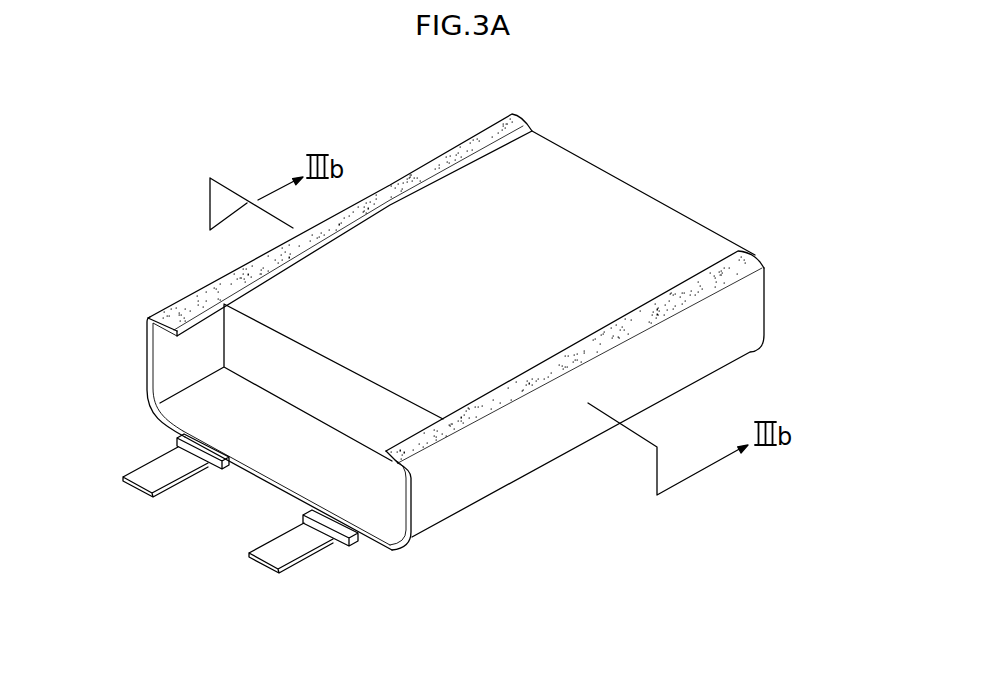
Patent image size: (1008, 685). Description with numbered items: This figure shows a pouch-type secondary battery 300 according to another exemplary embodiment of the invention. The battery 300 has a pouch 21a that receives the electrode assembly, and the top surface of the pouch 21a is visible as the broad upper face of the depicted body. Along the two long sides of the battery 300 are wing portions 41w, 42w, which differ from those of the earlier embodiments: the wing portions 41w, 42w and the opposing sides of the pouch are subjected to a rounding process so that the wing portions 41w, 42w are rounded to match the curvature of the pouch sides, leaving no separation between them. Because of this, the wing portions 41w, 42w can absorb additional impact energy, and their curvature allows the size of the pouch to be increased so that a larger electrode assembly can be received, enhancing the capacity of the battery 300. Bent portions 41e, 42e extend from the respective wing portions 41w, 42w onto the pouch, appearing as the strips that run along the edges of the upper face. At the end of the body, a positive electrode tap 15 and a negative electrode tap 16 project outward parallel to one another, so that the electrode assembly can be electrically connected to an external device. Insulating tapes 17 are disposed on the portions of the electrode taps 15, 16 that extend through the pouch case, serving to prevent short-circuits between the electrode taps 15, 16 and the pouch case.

The pouch-type secondary battery 300 is at (100, 88).
The bent portion 42e is at (484, 140).
The wing portion 42w is at (146, 350).
The pouch 21a is at (610, 200).
The bent portion 41e is at (744, 263).
The wing portion 41w is at (753, 318).
The positive electrode tap 15 is at (148, 481).
The negative electrode tap 16 is at (273, 556).
The insulating tape 17 is at (306, 513).